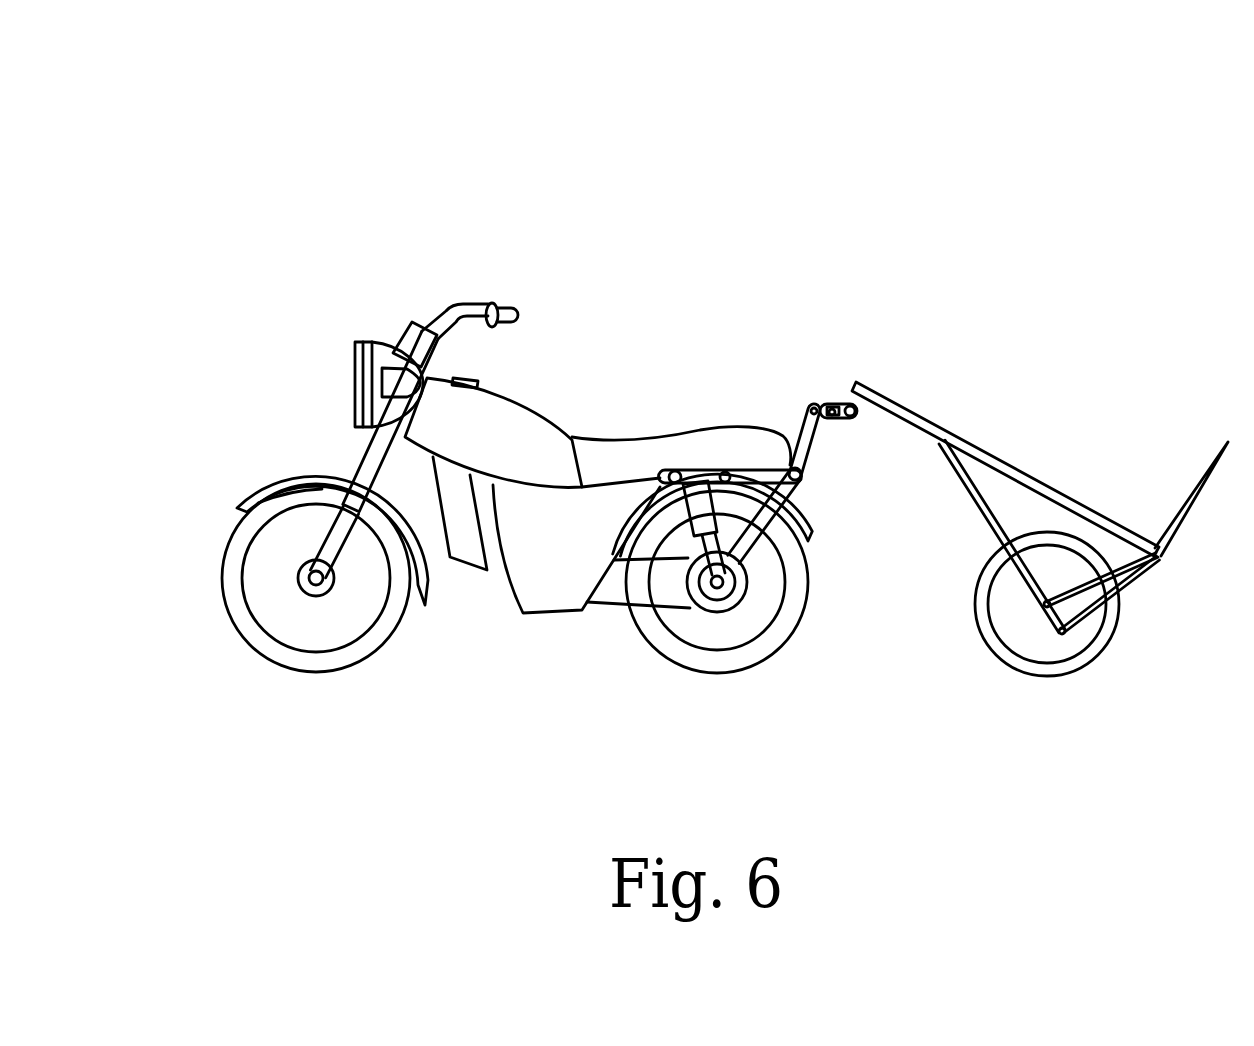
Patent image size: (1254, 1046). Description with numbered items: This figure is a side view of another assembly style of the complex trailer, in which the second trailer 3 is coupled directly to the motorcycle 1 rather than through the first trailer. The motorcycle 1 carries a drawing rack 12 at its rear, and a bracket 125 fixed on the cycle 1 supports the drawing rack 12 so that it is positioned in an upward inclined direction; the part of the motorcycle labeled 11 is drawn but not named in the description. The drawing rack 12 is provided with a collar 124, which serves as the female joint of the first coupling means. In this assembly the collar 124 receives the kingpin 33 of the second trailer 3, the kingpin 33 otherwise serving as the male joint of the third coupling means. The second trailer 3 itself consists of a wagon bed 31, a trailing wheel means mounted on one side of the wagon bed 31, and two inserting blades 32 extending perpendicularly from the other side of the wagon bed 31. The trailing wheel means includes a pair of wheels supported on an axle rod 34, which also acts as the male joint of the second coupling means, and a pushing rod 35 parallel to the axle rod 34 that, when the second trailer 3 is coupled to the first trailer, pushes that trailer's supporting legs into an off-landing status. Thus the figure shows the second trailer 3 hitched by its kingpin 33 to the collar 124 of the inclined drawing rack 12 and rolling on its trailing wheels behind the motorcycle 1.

The motorcycle 1 is at (550, 381).
The second trailer 3 is at (1024, 457).
The rear wheel 11 is at (673, 648).
The drawing rack 12 is at (743, 542).
The collar 124 is at (830, 402).
The bracket 125 is at (733, 470).
The wagon bed 31 is at (862, 384).
The inserting blades 32 is at (1170, 512).
The kingpin 33 is at (838, 418).
The axle rod 34 is at (1042, 606).
The pushing rod 35 is at (1070, 645).